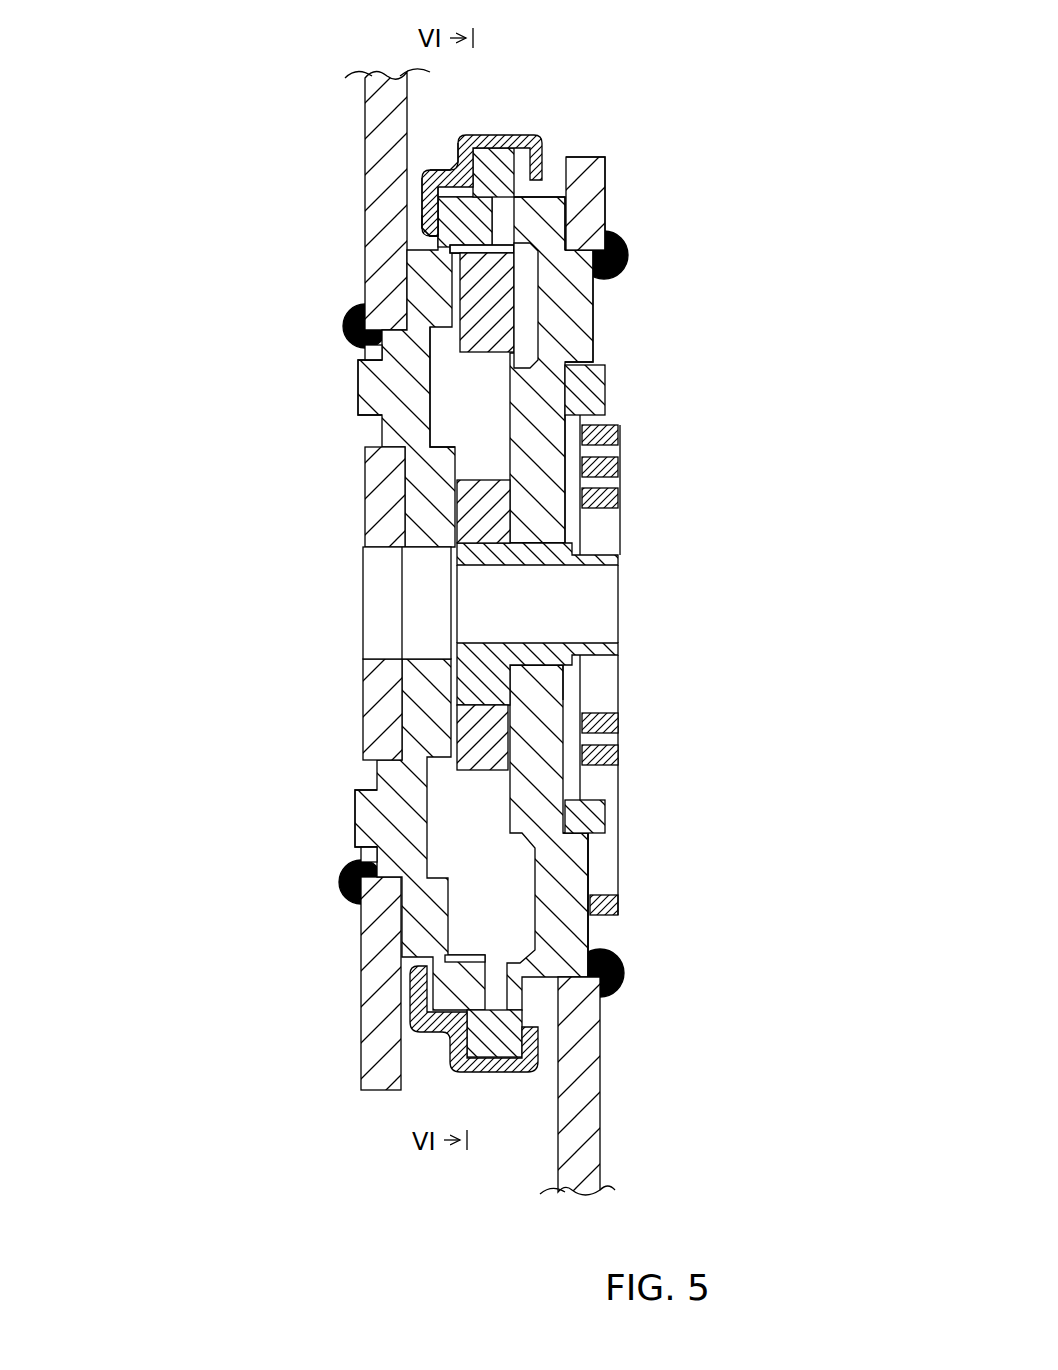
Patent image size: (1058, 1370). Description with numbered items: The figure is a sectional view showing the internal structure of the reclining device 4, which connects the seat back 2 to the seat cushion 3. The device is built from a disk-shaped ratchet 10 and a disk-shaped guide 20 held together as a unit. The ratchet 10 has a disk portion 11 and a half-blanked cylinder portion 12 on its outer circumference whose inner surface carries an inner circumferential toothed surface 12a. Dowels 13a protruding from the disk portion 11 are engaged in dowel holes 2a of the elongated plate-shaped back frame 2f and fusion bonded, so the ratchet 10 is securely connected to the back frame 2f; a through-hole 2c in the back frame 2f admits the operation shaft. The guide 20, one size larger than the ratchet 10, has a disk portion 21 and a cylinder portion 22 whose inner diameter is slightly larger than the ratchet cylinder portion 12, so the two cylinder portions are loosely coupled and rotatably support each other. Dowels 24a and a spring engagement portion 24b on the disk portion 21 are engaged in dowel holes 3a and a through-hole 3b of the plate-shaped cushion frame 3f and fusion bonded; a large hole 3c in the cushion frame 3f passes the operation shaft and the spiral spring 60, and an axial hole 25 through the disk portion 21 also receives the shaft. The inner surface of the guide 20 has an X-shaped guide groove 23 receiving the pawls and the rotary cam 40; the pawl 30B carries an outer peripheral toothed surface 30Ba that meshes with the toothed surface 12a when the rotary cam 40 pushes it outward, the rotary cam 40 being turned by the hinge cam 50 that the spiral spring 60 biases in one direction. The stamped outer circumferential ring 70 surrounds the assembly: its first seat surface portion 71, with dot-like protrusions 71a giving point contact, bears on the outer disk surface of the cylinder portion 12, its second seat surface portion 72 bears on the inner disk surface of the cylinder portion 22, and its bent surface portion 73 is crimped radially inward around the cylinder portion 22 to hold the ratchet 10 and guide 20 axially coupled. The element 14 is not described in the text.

The reclining device 4 is at (594, 46).
The seat back 2 is at (327, 579).
The back frame 2f is at (388, 112).
The dowel holes 2a is at (375, 441).
The through-hole 2c is at (387, 548).
The seat cushion 3 is at (626, 671).
The cushion frame 3f is at (593, 177).
The dowel holes 3a is at (603, 365).
The through-hole 3b is at (595, 927).
The large hole 3c is at (590, 425).
The ratchet 10 is at (428, 308).
The disk portion 11 is at (425, 297).
The cylinder portion 12 is at (423, 182).
The inner circumferential toothed surface 12a is at (470, 251).
The dowels 13a is at (378, 403).
The spring seat 14 is at (420, 657).
The guide 20 is at (549, 203).
The disk portion 21 is at (545, 448).
The cylinder portion 22 is at (493, 172).
The guide groove 23 is at (512, 403).
The dowels 24a is at (567, 312).
The spring engagement portion 24b is at (565, 862).
The axial hole 25 is at (548, 652).
The pawl 30B is at (499, 300).
The outer peripheral toothed surface 30Ba is at (393, 263).
The rotary cam 40 is at (476, 503).
The hinge cam 50 is at (550, 556).
The spiral spring 60 is at (616, 497).
The outer circumferential ring 70 is at (471, 136).
The first seat surface portion 71 is at (420, 229).
The protrusions 71a is at (422, 212).
The second seat surface portion 72 is at (467, 160).
The bent surface portion 73 is at (547, 195).